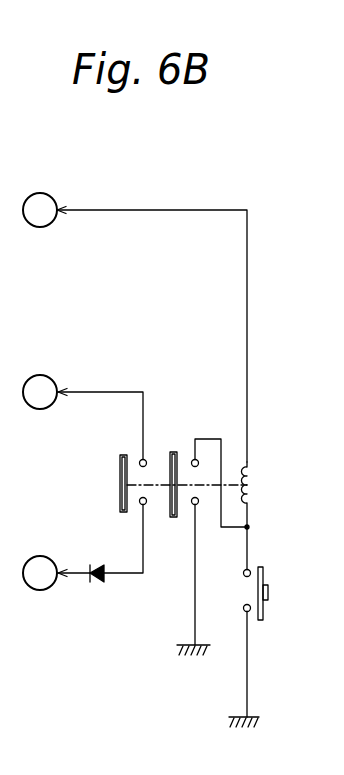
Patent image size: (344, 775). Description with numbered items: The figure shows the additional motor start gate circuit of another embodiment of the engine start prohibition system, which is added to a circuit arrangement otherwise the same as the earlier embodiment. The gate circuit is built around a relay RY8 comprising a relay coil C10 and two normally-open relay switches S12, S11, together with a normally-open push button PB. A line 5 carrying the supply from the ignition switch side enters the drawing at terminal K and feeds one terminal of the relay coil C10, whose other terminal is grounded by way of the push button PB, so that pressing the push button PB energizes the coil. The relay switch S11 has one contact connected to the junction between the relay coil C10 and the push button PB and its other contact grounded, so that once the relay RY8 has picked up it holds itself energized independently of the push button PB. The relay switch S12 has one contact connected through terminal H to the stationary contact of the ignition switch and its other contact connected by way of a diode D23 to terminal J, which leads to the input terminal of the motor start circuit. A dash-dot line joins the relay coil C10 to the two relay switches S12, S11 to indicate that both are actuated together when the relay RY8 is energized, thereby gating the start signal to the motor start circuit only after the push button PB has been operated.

The supply line 5 is at (153, 209).
The terminal K is at (40, 210).
The terminal H is at (40, 392).
The terminal J is at (40, 573).
The relay RY8 is at (183, 455).
The relay switch S12 is at (136, 498).
The relay switch S11 is at (187, 499).
The relay coil C10 is at (250, 488).
The diode D23 is at (95, 584).
The push button PB is at (265, 617).